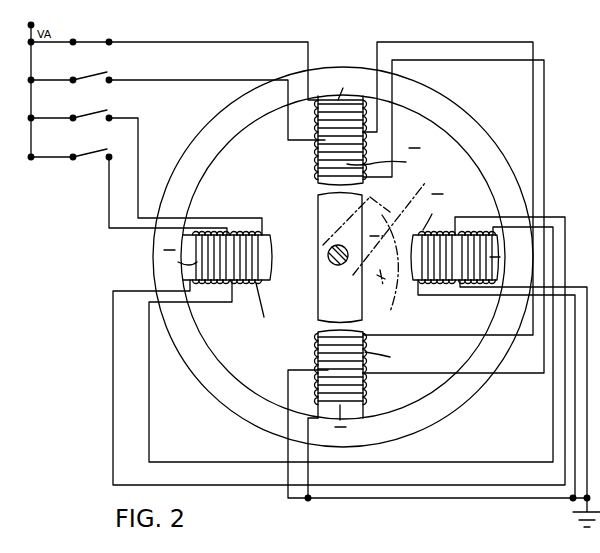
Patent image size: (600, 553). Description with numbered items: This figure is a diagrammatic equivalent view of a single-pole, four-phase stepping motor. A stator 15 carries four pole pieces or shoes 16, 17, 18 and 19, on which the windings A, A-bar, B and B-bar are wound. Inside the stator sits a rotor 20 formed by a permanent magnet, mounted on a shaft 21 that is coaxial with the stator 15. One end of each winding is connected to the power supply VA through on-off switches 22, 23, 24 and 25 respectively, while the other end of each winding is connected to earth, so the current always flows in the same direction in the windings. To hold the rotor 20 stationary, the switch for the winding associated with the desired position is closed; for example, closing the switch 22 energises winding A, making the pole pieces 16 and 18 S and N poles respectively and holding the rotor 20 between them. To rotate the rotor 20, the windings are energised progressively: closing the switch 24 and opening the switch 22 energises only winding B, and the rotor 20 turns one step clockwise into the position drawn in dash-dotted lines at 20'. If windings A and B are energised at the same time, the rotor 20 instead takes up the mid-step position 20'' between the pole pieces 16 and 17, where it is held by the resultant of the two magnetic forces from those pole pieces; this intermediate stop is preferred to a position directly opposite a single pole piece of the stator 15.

The stator 15 is at (467, 122).
The pole piece 16 is at (312, 140).
The pole piece 17 is at (455, 243).
The pole piece 18 is at (318, 370).
The pole piece 19 is at (229, 235).
The rotor 20 is at (369, 248).
The rotor position 20' is at (392, 272).
The rotor mid-step position 20'' is at (387, 221).
The shaft 21 is at (335, 266).
The on-off switch 22 is at (88, 40).
The on-off switch 23 is at (92, 76).
The on-off switch 24 is at (92, 115).
The on-off switch 25 is at (92, 154).